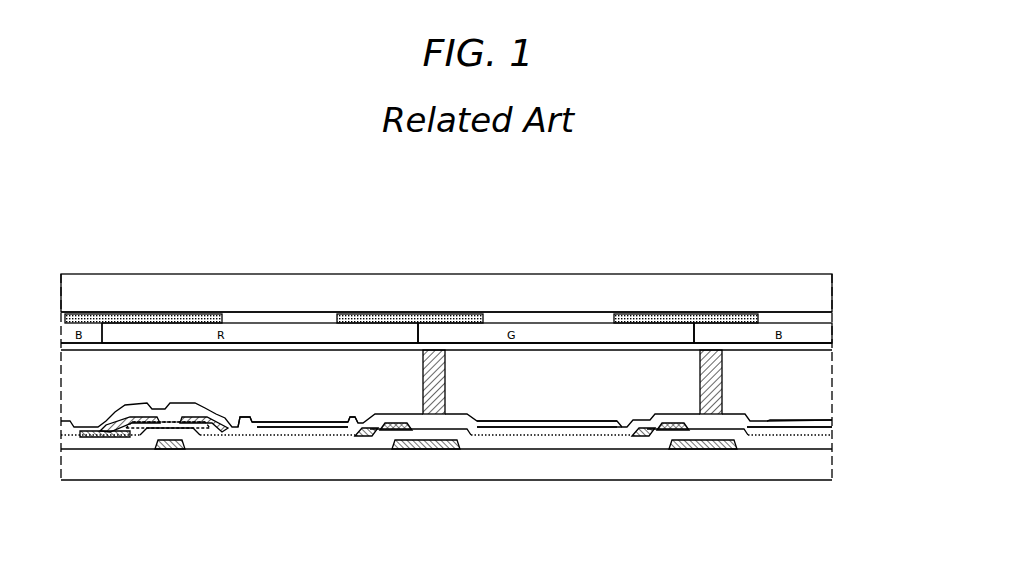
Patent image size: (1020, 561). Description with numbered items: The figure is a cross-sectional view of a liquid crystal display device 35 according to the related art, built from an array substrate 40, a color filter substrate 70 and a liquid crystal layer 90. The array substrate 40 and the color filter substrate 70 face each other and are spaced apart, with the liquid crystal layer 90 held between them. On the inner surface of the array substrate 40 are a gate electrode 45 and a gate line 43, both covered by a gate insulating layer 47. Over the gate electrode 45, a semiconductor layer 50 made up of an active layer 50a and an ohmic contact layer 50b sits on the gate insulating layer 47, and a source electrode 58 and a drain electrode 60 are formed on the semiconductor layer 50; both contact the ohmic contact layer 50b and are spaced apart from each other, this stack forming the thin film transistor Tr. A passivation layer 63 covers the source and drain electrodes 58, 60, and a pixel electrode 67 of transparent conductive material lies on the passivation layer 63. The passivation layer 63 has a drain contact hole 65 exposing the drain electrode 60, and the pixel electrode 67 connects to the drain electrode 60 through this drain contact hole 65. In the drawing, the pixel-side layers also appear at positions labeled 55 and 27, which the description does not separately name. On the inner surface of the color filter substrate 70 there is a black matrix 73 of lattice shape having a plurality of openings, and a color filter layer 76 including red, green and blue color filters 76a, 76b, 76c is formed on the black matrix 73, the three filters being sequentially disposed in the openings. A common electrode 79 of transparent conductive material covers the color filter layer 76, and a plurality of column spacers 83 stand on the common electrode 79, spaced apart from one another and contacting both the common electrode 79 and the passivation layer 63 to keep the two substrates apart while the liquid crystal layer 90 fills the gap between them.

The liquid crystal display device 35 is at (776, 196).
The color filter substrate 70 is at (80, 299).
The black matrix 73 is at (112, 312).
The common electrode 79 is at (256, 343).
The color filter layer 76 is at (735, 232).
The red color filter 76a is at (332, 322).
The green color filter 76b is at (545, 330).
The blue color filter 76c is at (800, 326).
The column spacer 83 is at (446, 380).
The liquid crystal layer 90 is at (823, 391).
The array substrate 40 is at (70, 472).
The gate line 43 is at (424, 450).
The gate electrode 45 is at (178, 449).
The gate insulating layer 47 is at (278, 436).
The data line 55 is at (97, 438).
The semiconductor layer 50 is at (184, 476).
The active layer 50a is at (197, 434).
The ohmic contact layer 50b is at (206, 430).
The source electrode 58 is at (124, 438).
The drain electrode 60 is at (207, 434).
The passivation layer 27 is at (191, 404).
The drain contact hole 65 is at (237, 404).
The passivation layer 63 is at (349, 420).
The pixel electrode 67 is at (276, 422).
The thin film transistor Tr is at (120, 426).